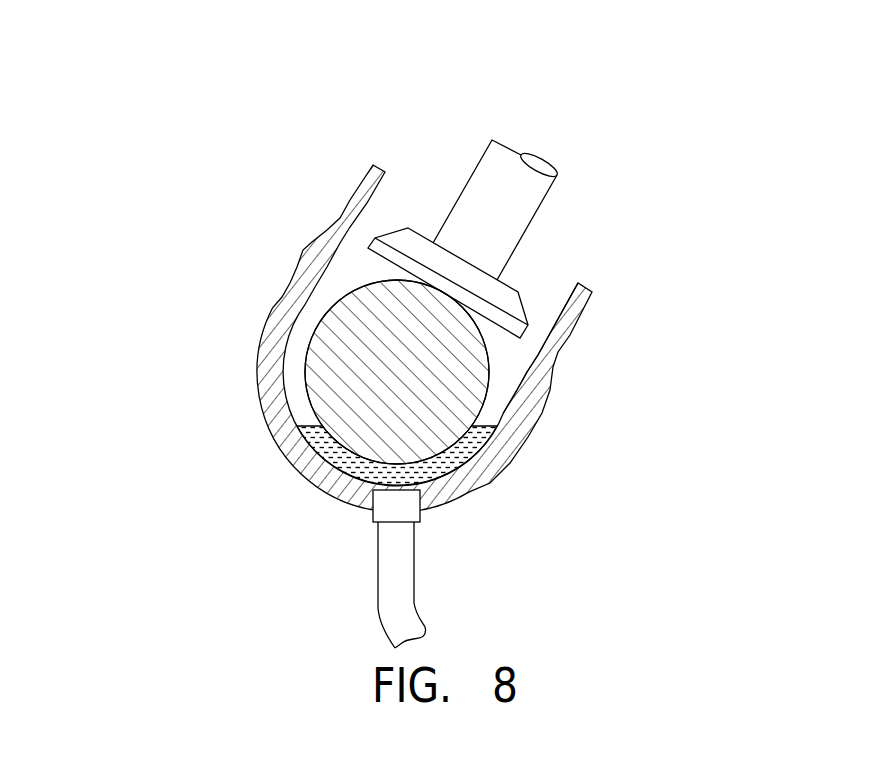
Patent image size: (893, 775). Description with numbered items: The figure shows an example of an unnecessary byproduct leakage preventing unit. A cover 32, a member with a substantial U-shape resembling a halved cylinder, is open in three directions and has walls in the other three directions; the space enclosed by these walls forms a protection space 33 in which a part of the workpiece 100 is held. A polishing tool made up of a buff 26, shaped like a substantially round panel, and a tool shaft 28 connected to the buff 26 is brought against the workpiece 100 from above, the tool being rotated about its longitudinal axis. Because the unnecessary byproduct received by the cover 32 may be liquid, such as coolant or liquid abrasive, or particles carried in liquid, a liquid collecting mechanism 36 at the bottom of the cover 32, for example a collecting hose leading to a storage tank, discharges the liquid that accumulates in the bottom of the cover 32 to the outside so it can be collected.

The buff 26 is at (407, 238).
The tool shaft 28 is at (513, 223).
The cover 32 is at (273, 420).
The protection space 33 is at (503, 380).
The liquid collecting mechanism 36 is at (392, 557).
The workpiece 100 is at (462, 403).